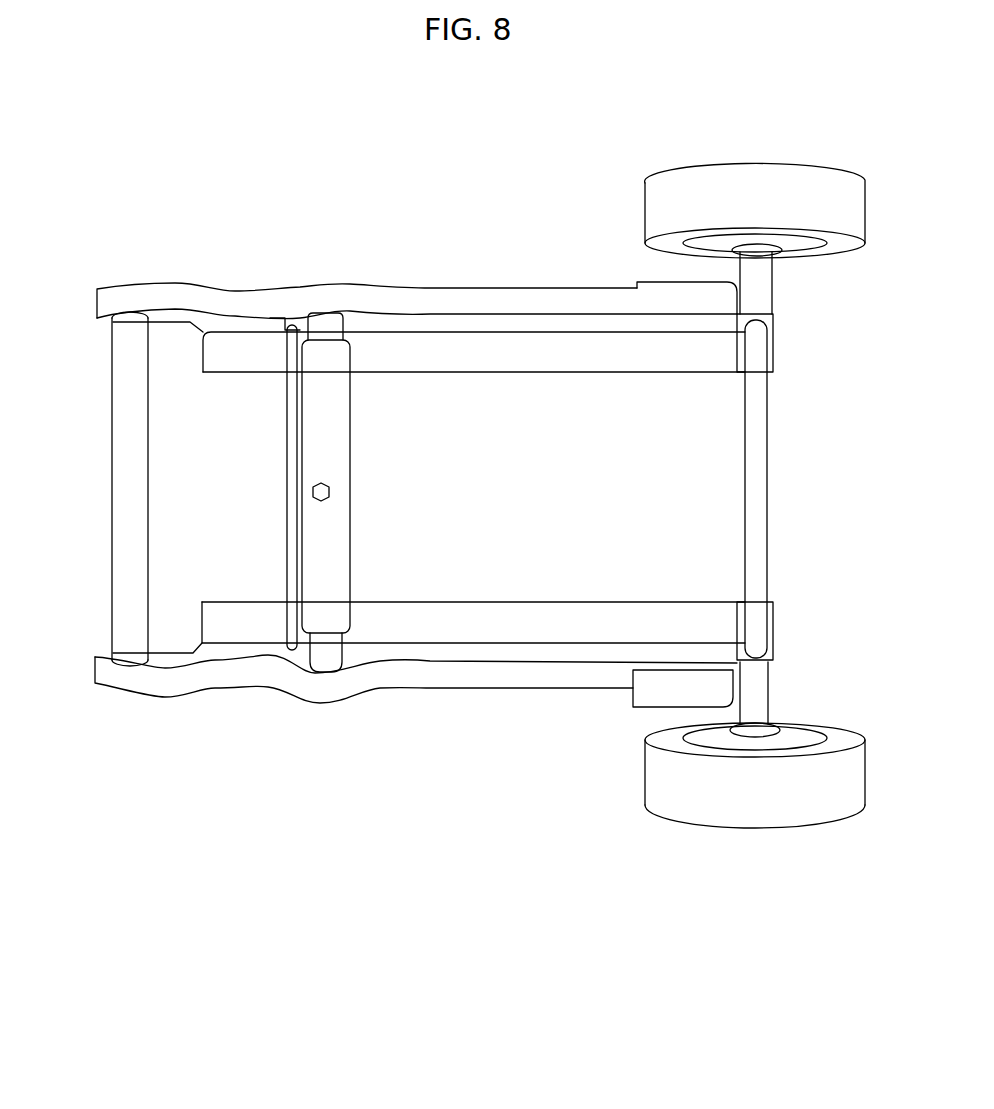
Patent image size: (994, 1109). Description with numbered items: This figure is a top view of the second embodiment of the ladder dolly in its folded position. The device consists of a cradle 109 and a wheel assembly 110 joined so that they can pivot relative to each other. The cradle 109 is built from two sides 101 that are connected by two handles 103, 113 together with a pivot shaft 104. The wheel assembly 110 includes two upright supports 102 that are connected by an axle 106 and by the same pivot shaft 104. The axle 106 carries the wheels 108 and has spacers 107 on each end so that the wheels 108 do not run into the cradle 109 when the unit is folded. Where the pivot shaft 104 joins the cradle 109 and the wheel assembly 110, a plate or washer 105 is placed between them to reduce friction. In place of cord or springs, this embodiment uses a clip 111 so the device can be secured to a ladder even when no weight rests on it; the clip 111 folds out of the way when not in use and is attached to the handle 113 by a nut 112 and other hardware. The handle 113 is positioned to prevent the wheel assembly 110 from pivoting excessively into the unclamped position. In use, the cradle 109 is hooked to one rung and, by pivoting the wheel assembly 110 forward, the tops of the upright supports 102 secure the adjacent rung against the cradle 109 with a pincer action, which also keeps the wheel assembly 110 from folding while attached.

The sides 101 is at (71, 486).
The upright supports 102 is at (471, 352).
The handle 103 is at (137, 518).
The pivot shaft 104 is at (291, 452).
The plate or washer 105 is at (283, 327).
The axle 106 is at (755, 502).
The spacers 107 is at (755, 717).
The wheels 108 is at (840, 242).
The cradle 109 is at (123, 268).
The wheel assembly 110 is at (838, 832).
The clip 111 is at (323, 567).
The nut 112 is at (330, 485).
The handle 113 is at (338, 335).